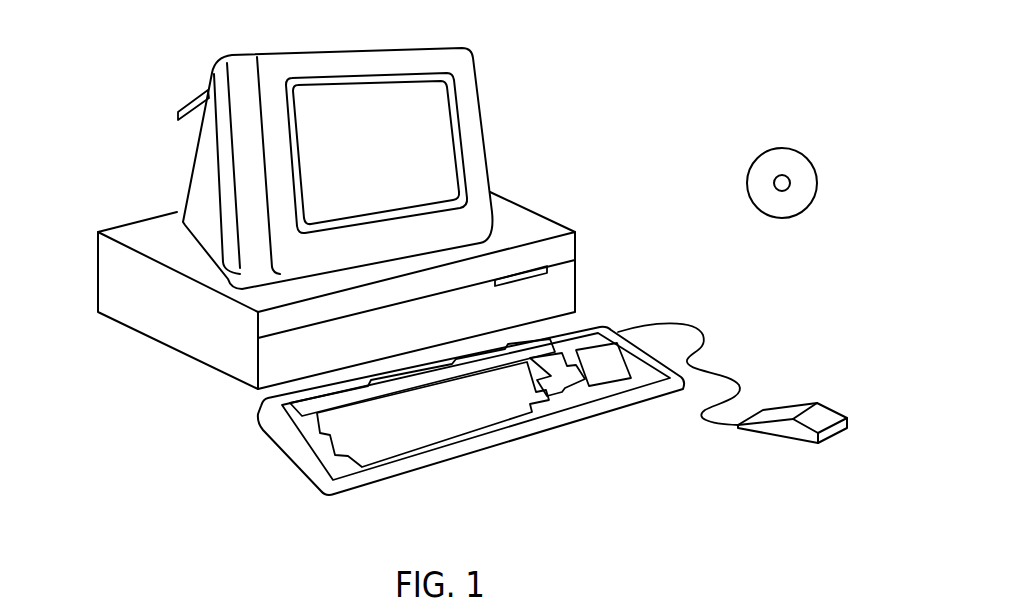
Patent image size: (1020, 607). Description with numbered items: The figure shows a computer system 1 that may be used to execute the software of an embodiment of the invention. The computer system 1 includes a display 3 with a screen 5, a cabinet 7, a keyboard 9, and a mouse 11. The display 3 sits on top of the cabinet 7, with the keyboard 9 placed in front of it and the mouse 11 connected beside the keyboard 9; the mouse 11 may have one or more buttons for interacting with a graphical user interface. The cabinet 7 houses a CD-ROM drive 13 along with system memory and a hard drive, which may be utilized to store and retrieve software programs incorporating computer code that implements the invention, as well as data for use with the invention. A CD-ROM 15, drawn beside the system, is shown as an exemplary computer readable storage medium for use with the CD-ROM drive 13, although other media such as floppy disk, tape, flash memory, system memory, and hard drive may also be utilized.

The computer system 1 is at (691, 29).
The display 3 is at (488, 167).
The screen 5 is at (443, 113).
The cabinet 7 is at (221, 373).
The keyboard 9 is at (478, 455).
The mouse 11 is at (823, 407).
The CD-ROM drive 13 is at (550, 262).
The CD-ROM 15 is at (797, 152).